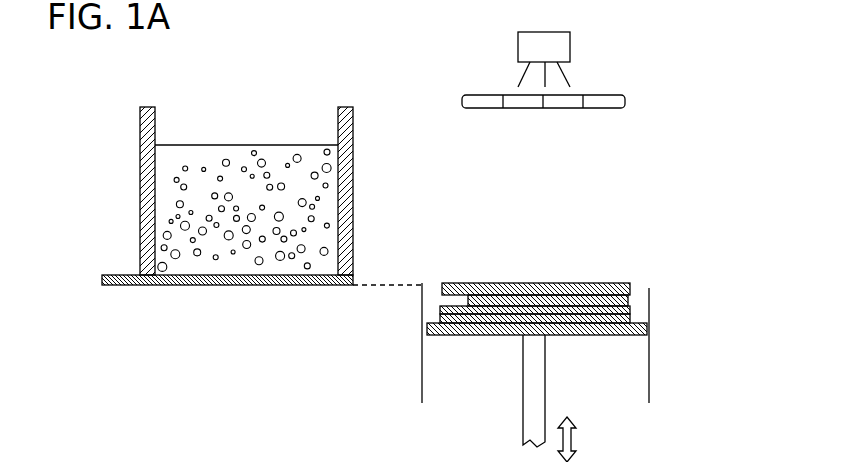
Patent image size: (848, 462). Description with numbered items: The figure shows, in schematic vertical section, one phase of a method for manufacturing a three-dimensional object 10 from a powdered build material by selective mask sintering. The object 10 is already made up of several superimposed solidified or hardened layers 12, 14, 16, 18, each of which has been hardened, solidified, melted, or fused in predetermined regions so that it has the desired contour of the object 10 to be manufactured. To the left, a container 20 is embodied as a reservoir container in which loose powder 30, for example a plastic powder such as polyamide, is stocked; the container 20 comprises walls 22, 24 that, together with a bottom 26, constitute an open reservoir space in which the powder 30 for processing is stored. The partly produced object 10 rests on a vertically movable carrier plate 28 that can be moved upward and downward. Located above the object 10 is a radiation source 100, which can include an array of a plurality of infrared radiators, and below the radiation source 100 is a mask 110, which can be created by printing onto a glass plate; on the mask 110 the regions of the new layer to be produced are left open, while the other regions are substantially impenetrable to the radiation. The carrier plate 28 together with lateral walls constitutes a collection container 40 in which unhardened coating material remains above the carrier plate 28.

The three-dimensional object 10 is at (556, 311).
The solidified layer 12 is at (465, 336).
The solidified layer 14 is at (444, 307).
The solidified layer 16 is at (634, 298).
The solidified layer 18 is at (598, 284).
The container 20 is at (263, 219).
The container wall 22 is at (353, 137).
The container wall 24 is at (140, 133).
The bottom 26 is at (243, 286).
The carrier plate 28 is at (604, 336).
The powdered coating material 30 is at (243, 145).
The collection container 40 is at (422, 383).
The radiation source 100 is at (570, 46).
The mask 110 is at (625, 101).